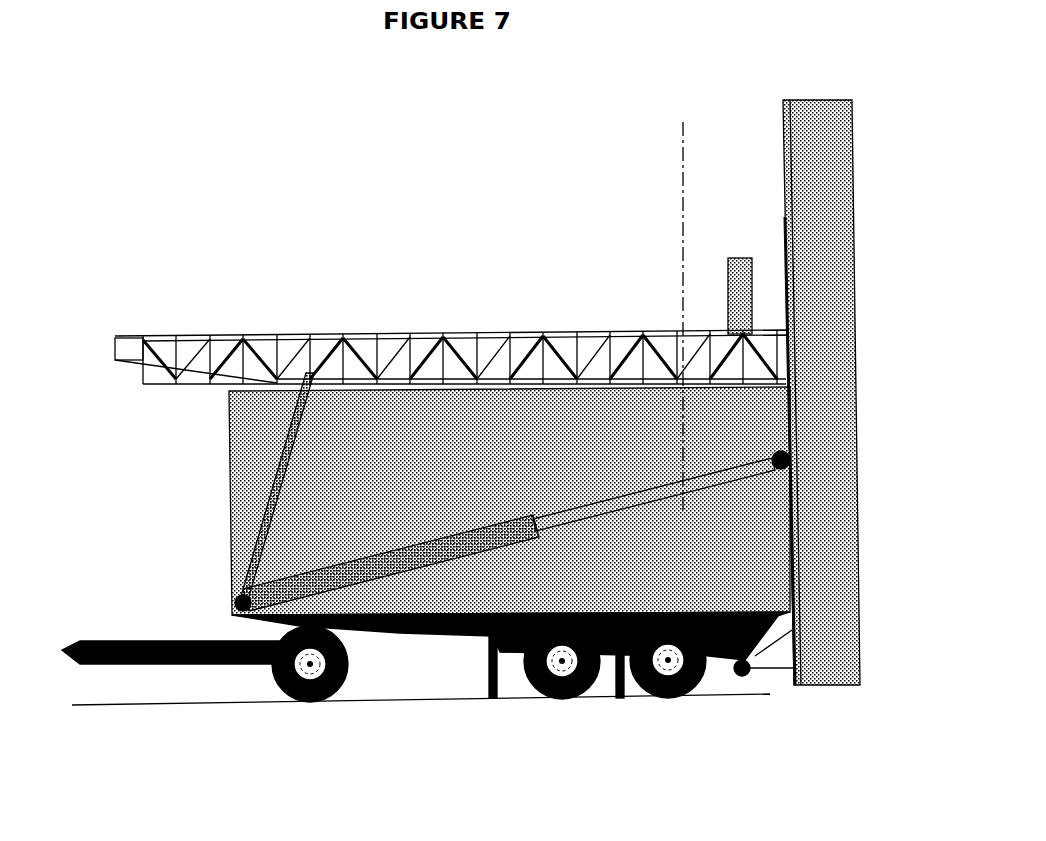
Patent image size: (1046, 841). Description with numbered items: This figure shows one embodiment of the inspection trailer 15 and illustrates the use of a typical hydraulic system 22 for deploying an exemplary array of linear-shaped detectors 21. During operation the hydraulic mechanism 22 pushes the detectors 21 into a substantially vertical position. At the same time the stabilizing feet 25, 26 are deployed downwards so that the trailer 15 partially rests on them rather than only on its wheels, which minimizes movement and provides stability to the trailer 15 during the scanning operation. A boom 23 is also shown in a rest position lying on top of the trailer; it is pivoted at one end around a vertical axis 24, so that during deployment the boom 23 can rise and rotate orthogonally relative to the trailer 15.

The inspection trailer 15 is at (240, 441).
The linear-shaped detectors 21 is at (790, 262).
The hydraulic system 22 is at (240, 590).
The boom 23 is at (198, 334).
The vertical axis 24 is at (680, 178).
The stabilizing foot 25 is at (493, 698).
The stabilizing foot 26 is at (620, 698).